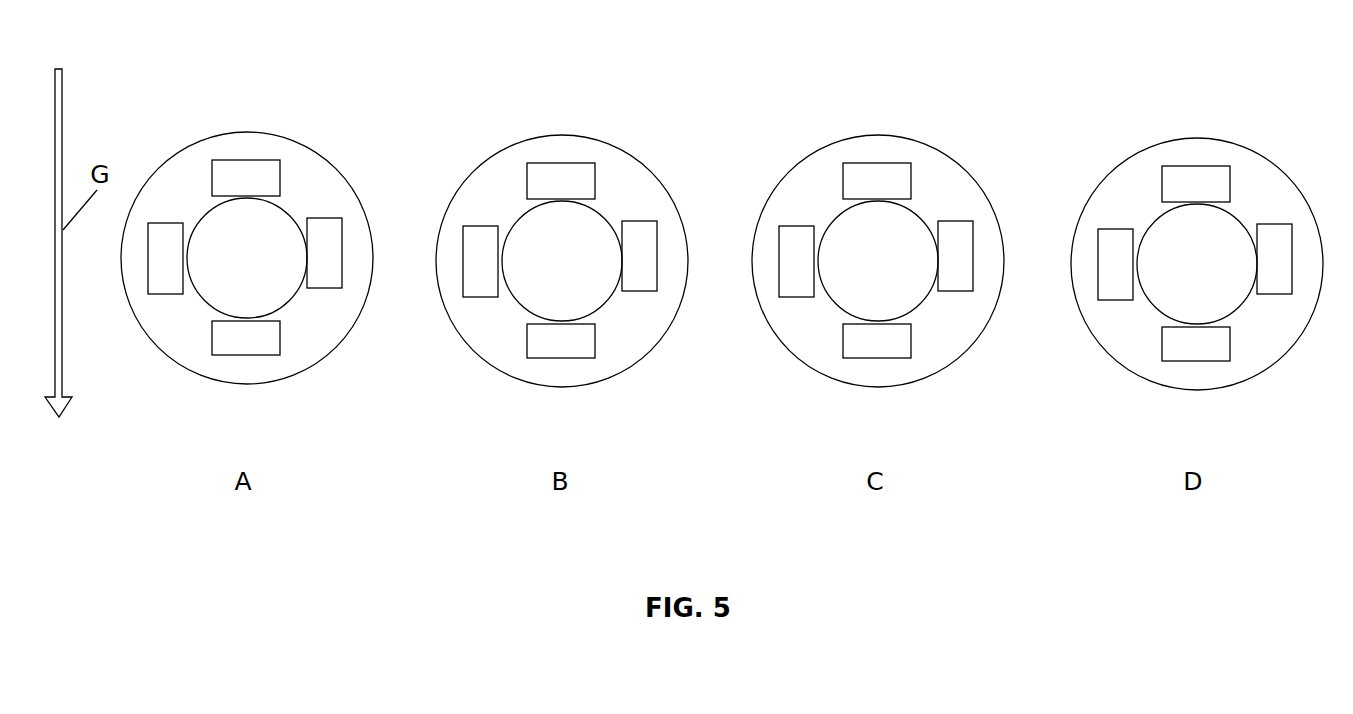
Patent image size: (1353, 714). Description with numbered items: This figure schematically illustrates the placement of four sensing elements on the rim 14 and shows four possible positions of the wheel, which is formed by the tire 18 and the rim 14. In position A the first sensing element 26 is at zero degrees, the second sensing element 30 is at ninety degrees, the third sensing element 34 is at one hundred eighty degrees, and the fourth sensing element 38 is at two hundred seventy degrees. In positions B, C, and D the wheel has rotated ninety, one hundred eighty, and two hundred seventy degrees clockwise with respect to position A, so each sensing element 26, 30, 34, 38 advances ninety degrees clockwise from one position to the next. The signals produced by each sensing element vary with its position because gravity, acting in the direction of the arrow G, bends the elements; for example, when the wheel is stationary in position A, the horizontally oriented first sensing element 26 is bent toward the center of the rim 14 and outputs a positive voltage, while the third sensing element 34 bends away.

The rim 14 is at (275, 137).
The tire 18 is at (284, 208).
The first sensing element 26 is at (209, 177).
The second sensing element 30 is at (318, 218).
The third sensing element 34 is at (278, 336).
The fourth sensing element 38 is at (165, 295).